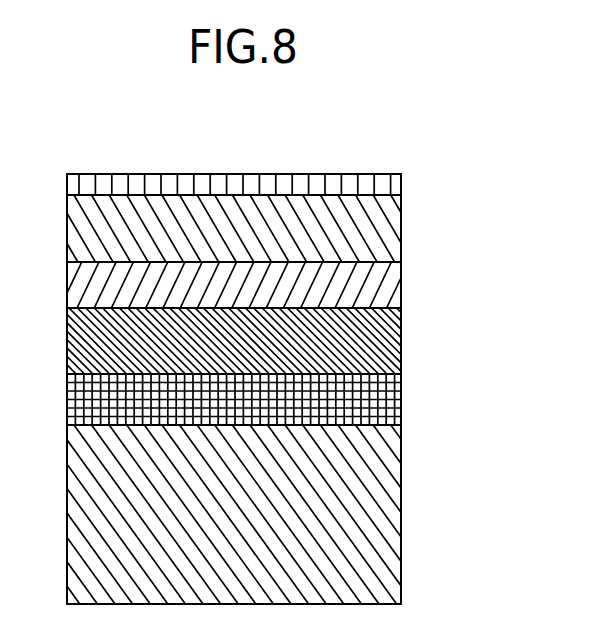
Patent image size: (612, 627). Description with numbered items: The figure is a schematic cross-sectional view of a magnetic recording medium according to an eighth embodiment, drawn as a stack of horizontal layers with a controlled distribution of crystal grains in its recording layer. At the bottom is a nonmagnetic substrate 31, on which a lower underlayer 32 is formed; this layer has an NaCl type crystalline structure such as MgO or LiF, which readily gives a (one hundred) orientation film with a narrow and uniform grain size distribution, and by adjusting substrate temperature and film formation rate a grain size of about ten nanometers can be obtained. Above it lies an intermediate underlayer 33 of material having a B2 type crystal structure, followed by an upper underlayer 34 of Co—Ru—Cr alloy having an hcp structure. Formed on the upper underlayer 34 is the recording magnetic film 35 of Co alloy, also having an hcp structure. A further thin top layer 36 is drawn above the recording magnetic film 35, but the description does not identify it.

The nonmagnetic substrate 31 is at (390, 505).
The lower underlayer 32 is at (390, 405).
The intermediate underlayer 33 is at (390, 342).
The upper underlayer 34 is at (390, 288).
The recording magnetic film 35 is at (393, 235).
The top layer 36 is at (393, 186).